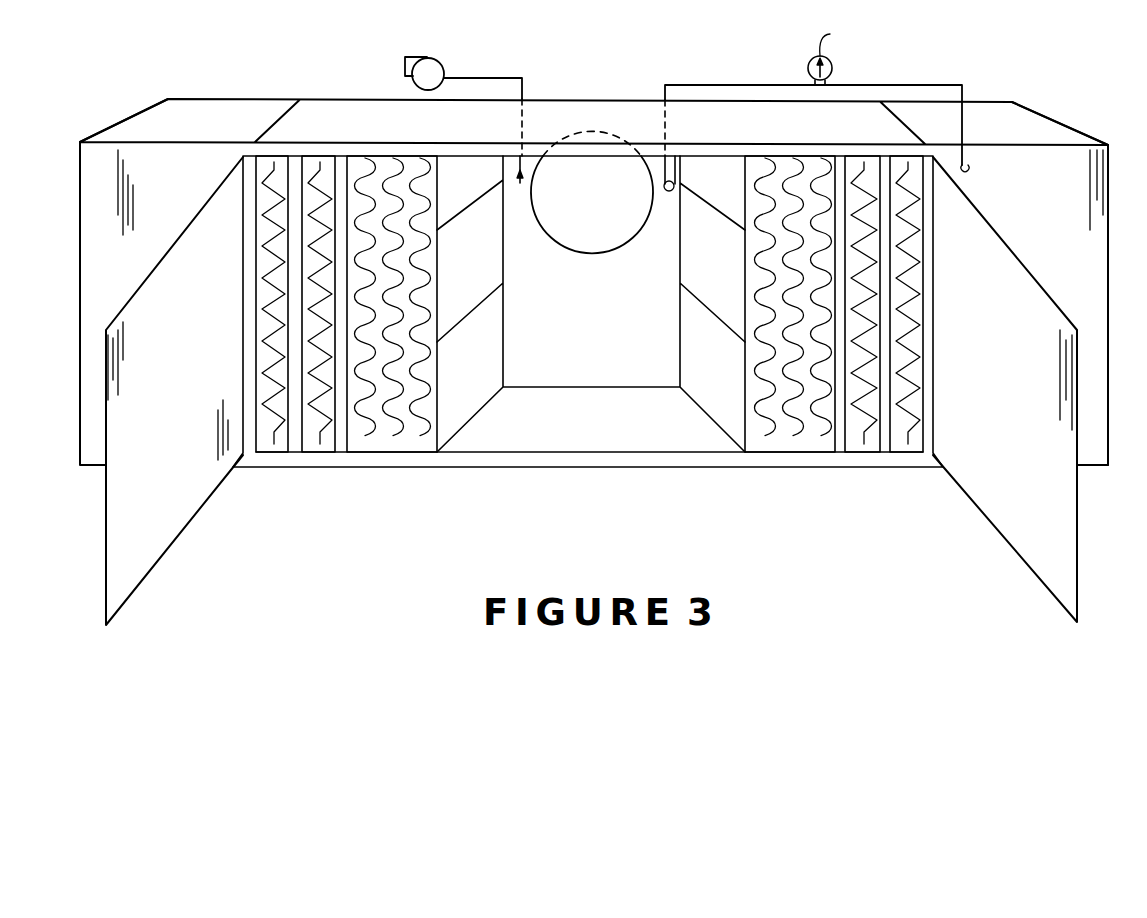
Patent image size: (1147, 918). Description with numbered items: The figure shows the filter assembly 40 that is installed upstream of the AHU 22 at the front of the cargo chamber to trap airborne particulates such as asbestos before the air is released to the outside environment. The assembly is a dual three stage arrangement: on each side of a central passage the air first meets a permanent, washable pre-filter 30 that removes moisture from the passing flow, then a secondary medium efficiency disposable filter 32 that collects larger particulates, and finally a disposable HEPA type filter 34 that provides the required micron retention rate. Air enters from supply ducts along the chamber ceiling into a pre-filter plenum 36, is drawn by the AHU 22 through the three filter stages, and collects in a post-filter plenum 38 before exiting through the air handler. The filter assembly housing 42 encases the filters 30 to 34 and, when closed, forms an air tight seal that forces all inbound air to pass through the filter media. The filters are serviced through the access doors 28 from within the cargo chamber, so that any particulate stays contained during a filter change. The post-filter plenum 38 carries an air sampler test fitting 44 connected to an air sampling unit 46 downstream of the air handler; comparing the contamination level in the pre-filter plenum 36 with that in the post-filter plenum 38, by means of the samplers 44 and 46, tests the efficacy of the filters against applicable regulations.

The AHU 22 is at (588, 170).
The access doors 28 is at (183, 505).
The pre-filter 30 is at (276, 455).
The secondary medium efficiency disposable filter 32 is at (320, 455).
The HEPA type filter 34 is at (397, 447).
The pre-filter plenum 36 is at (130, 152).
The post-filter plenum 38 is at (590, 442).
The filter assembly 40 is at (638, 80).
The filter assembly housing 42 is at (1109, 222).
The air sampler test fitting 44 is at (972, 156).
The air sampling unit 46 is at (436, 58).